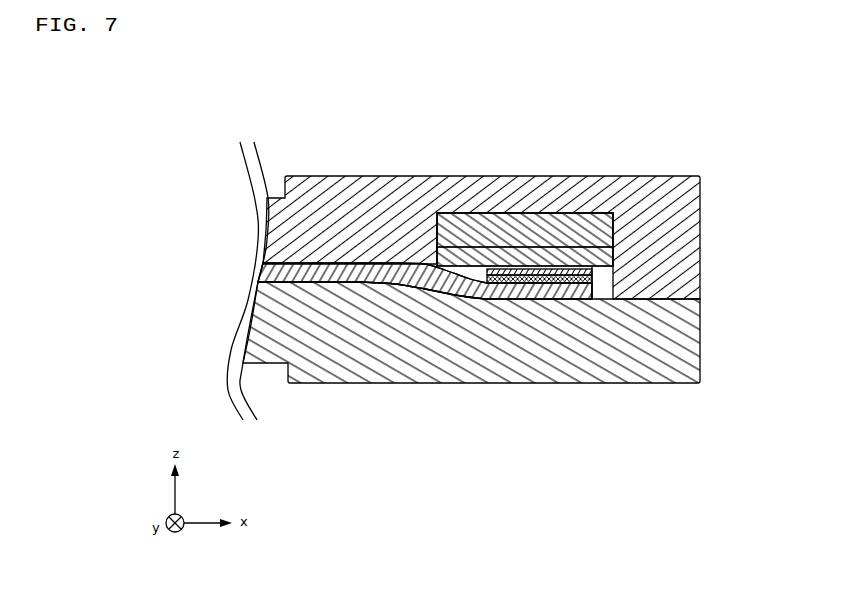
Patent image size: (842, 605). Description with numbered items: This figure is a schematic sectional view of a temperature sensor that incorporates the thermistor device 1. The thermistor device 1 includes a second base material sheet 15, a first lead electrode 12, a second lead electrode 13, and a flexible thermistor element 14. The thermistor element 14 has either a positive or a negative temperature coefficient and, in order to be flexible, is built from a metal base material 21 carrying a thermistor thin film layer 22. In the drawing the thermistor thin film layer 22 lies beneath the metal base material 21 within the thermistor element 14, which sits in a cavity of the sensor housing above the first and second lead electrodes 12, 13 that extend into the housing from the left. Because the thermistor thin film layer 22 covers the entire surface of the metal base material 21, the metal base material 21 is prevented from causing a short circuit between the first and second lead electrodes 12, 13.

The thermistor device 1 is at (190, 97).
The first lead electrode 12 is at (362, 285).
The second lead electrode 13 is at (425, 349).
The flexible thermistor element 14 is at (538, 203).
The second base material sheet 15 is at (363, 176).
The metal base material 21 is at (613, 228).
The thermistor thin film layer 22 is at (613, 257).